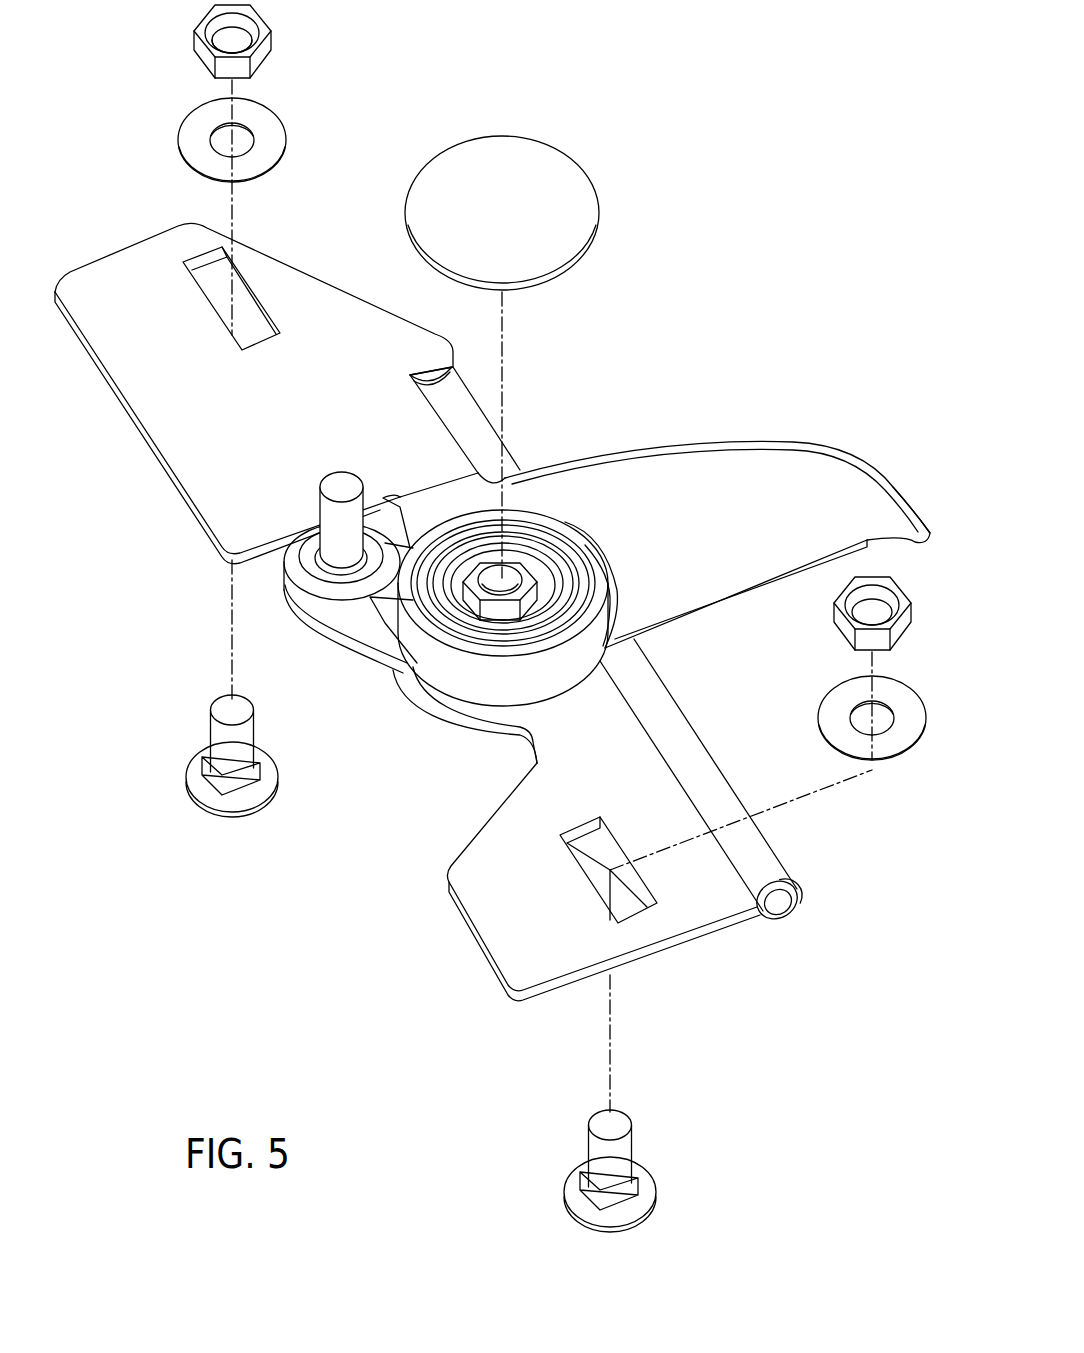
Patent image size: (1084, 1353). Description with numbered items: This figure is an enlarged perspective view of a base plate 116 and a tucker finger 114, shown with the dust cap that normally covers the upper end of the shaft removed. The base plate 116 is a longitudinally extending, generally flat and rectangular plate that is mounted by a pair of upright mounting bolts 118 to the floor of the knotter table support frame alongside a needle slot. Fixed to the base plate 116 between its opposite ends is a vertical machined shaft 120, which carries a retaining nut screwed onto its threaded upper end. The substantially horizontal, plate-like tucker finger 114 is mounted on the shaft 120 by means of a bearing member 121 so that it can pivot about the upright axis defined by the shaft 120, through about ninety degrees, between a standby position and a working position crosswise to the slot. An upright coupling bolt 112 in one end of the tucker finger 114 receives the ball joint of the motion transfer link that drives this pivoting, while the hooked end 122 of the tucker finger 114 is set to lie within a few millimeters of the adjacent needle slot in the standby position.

The upright coupling bolt 112 is at (327, 512).
The tucker finger 114 is at (740, 610).
The base plate 116 is at (727, 760).
The upright mounting bolt 118 is at (252, 797).
The machined shaft 120 is at (510, 577).
The bearing member 121 is at (560, 575).
The hooked end 122 is at (913, 527).